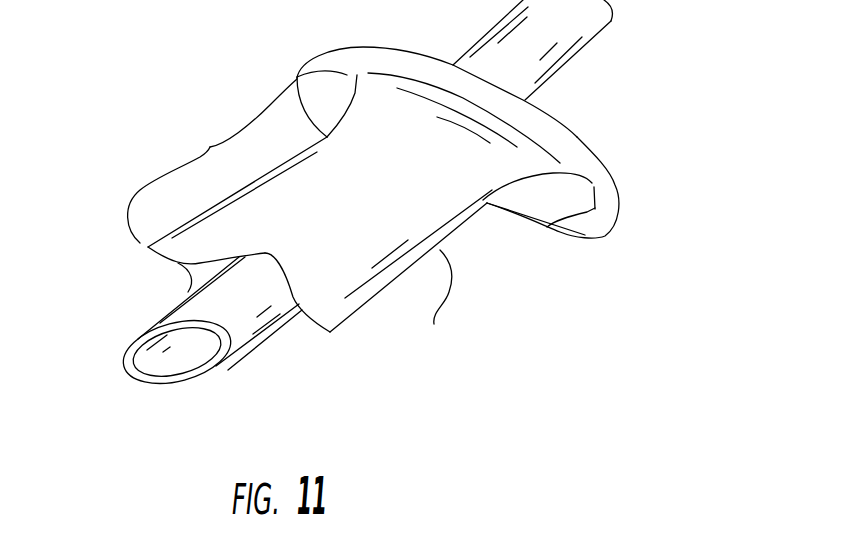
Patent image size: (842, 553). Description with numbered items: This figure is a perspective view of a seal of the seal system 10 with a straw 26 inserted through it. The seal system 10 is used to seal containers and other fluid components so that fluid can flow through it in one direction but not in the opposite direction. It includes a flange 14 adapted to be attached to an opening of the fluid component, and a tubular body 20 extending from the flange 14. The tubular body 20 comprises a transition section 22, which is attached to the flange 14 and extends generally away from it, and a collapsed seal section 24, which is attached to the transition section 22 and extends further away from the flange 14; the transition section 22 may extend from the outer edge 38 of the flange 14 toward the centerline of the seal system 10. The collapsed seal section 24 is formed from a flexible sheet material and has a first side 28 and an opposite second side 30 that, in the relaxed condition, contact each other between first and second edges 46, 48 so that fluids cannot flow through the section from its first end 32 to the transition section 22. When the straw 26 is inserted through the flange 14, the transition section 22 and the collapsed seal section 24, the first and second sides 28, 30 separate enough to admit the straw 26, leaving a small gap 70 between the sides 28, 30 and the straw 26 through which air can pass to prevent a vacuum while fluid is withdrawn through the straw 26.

The seal system 10 is at (692, 154).
The flange 14 is at (580, 137).
The tubular body 20 is at (210, 147).
The transition section 22 is at (442, 247).
The collapsed seal section 24 is at (343, 332).
The straw 26 is at (601, 37).
The first side 28 is at (322, 236).
The second side 30 is at (180, 272).
The first end 32 is at (320, 336).
The outer edge 38 is at (621, 201).
The first edge 46 is at (225, 198).
The second edge 48 is at (363, 306).
The small gap 70 is at (186, 294).